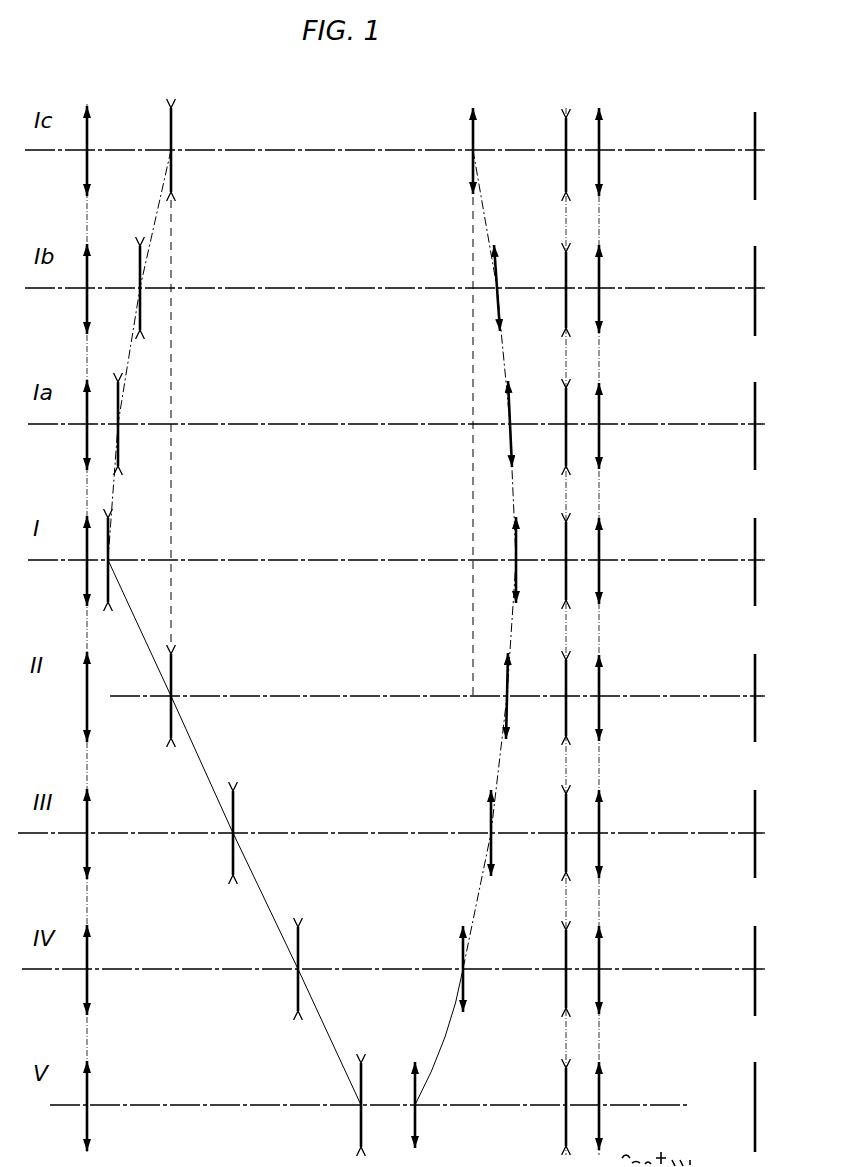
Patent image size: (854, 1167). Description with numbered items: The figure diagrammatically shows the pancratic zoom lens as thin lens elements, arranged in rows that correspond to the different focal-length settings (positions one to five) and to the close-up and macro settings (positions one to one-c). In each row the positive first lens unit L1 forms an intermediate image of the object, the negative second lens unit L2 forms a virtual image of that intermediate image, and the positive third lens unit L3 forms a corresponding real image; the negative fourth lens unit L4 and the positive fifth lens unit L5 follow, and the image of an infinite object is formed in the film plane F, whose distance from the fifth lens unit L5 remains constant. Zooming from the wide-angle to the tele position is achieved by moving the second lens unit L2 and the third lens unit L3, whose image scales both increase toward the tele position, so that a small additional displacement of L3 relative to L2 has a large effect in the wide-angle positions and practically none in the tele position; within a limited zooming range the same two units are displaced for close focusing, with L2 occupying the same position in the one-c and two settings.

The first lens unit L1 is at (91, 819).
The second lens unit L2 is at (254, 816).
The third lens unit L3 is at (487, 827).
The fourth lens unit L4 is at (545, 850).
The fifth lens unit L5 is at (601, 852).
The film plane F is at (763, 619).